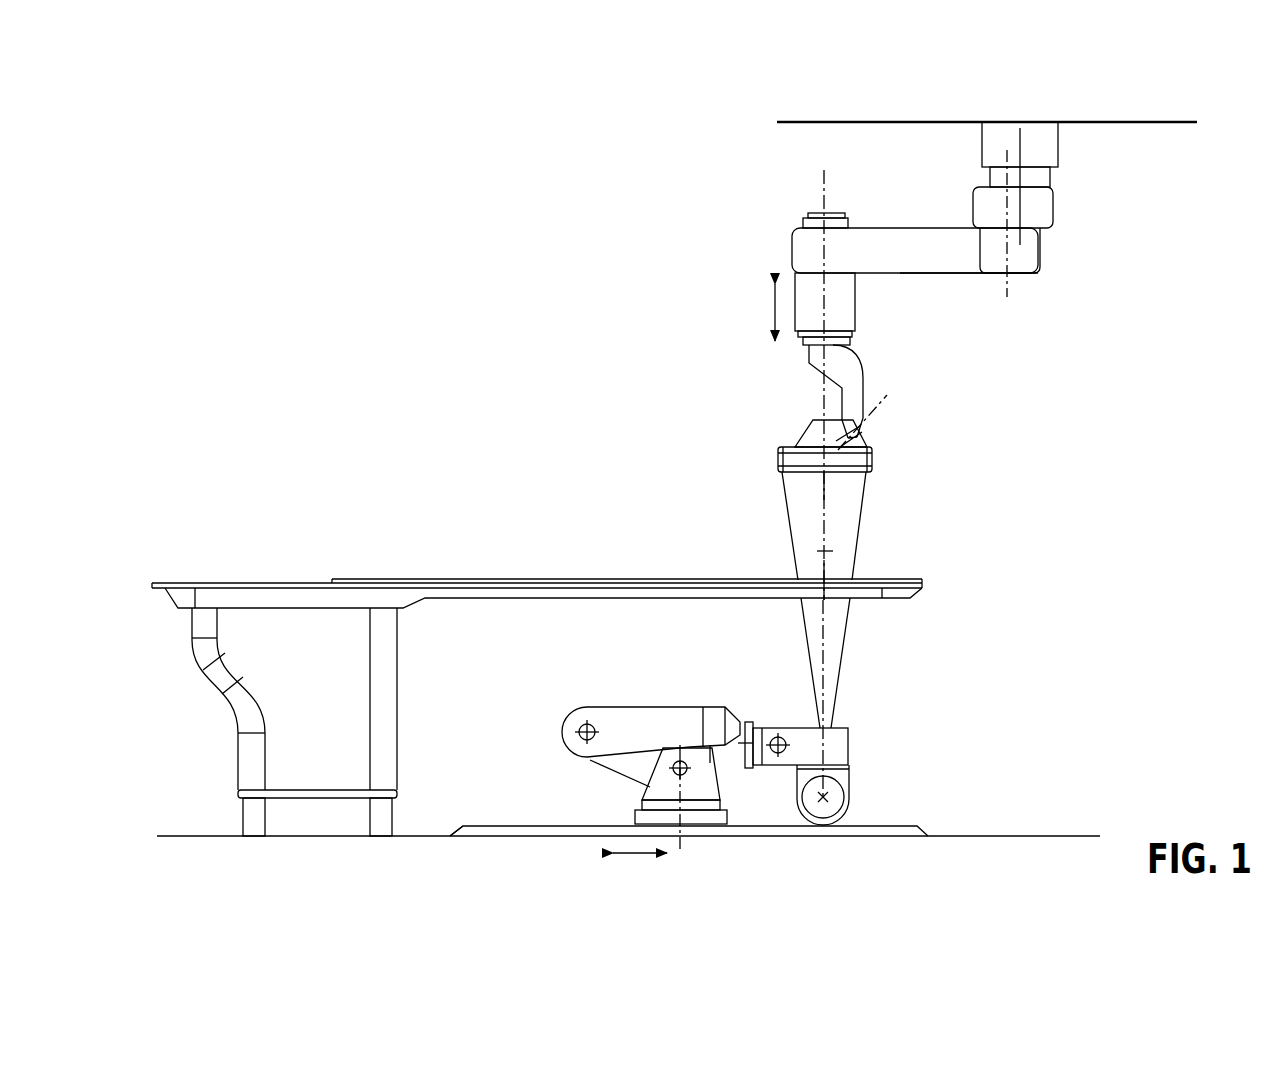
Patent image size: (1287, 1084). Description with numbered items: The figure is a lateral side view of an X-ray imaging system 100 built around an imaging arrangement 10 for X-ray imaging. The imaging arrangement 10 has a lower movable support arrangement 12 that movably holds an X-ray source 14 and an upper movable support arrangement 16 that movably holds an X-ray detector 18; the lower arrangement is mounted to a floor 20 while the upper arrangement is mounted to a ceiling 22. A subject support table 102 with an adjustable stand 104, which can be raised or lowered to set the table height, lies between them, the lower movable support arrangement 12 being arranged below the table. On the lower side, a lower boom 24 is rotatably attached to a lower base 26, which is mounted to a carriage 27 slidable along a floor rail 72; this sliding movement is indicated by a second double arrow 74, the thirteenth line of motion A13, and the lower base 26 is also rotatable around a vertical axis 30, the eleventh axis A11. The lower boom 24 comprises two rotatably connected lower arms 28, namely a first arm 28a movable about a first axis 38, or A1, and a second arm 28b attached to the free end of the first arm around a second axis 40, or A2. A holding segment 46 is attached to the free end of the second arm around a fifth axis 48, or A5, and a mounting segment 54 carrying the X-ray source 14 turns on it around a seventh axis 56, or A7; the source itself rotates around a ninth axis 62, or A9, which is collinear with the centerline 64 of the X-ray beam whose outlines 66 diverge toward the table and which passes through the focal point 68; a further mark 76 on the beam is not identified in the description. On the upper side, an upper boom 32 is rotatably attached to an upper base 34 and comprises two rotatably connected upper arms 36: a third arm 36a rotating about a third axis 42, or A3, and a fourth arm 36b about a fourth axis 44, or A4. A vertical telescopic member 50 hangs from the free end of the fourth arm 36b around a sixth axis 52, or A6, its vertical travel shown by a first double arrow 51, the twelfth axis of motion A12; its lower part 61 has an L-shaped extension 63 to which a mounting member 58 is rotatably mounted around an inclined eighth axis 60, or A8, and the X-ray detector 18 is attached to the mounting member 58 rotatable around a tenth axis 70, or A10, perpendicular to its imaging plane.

The X-ray imaging system 100 is at (630, 385).
The imaging arrangement 10 is at (1047, 421).
The lower movable support arrangement 12 is at (945, 712).
The X-ray source 14 is at (852, 790).
The upper movable support arrangement 16 is at (1102, 253).
The X-ray detector 18 is at (875, 462).
The floor 20 is at (968, 830).
The ceiling 22 is at (780, 126).
The lower boom 24 is at (684, 683).
The lower base 26 is at (737, 818).
The carriage 27 is at (637, 815).
The lower arms 28 is at (568, 706).
The first arm 28a is at (592, 758).
The second arm 28b is at (622, 706).
The vertical axis 30 is at (682, 838).
The upper boom 32 is at (1090, 283).
The upper base 34 is at (1063, 138).
The upper arms 36 is at (950, 226).
The third arm 36a is at (1055, 203).
The fourth arm 36b is at (942, 275).
The first axis 38 is at (677, 750).
The second axis 40 is at (574, 728).
The third axis 42 is at (1018, 142).
The fourth axis 44 is at (1008, 258).
The holding segment 46 is at (748, 726).
The fifth axis 48 is at (795, 805).
The vertical telescopic member 50 is at (860, 300).
The first double arrow 51 is at (772, 302).
The sixth axis 52 is at (795, 240).
The mounting segment 54 is at (808, 727).
The seventh axis 56 is at (772, 728).
The mounting member 58 is at (837, 423).
The inclined eighth axis 60 is at (872, 416).
The lower part 61 is at (805, 362).
The ninth axis 62 is at (850, 745).
The L-shaped end or extension 63 is at (852, 355).
The centerline 64 is at (835, 568).
The outlines 66 is at (863, 500).
The focal point 68 is at (840, 815).
The tenth axis 70 is at (822, 482).
The floor rail 72 is at (482, 832).
The second double arrow 74 is at (648, 855).
The focal point 76 is at (830, 550).
The subject support table 102 is at (490, 580).
The adjustable stand 104 is at (398, 668).
The first axis A1 is at (693, 798).
The second axis A2 is at (619, 734).
The third axis A3 is at (1019, 106).
The fourth axis A4 is at (1006, 238).
The fifth axis A5 is at (732, 762).
The sixth axis A6 is at (824, 372).
The seventh axis A7 is at (797, 748).
The eighth axis A8 is at (880, 411).
The ninth axis A9 is at (824, 700).
The tenth axis A10 is at (832, 522).
The eleventh axis A11 is at (689, 879).
The twelfth line or axis of motion A12 is at (767, 268).
The thirteenth line or axis of motion A13 is at (584, 854).